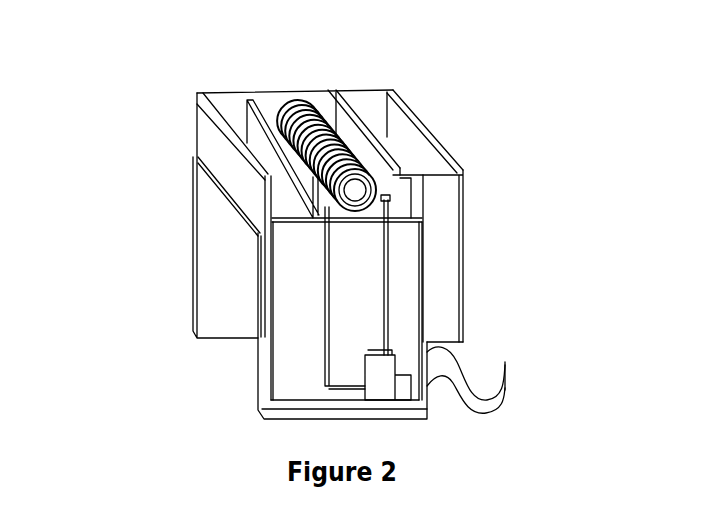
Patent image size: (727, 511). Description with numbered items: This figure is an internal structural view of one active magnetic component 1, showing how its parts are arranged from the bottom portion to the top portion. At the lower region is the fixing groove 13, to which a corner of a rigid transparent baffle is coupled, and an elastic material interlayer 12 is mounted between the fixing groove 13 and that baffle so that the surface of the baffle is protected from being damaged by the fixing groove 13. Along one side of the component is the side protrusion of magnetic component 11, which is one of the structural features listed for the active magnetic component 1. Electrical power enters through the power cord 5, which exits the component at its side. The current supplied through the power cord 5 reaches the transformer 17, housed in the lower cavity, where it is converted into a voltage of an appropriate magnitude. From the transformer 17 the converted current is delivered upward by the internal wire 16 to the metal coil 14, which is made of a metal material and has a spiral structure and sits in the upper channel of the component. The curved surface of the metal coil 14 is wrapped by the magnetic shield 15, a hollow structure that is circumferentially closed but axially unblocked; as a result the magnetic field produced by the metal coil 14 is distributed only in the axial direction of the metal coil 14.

The active magnetic component 1 is at (207, 131).
The side protrusion of magnetic component 11 is at (191, 196).
The elastic material interlayer 12 is at (242, 213).
The fixing groove 13 is at (247, 345).
The metal coil 14 is at (322, 128).
The magnetic shield 15 is at (400, 177).
The internal wire 16 is at (385, 258).
The transformer 17 is at (377, 372).
The power cord 5 is at (465, 388).